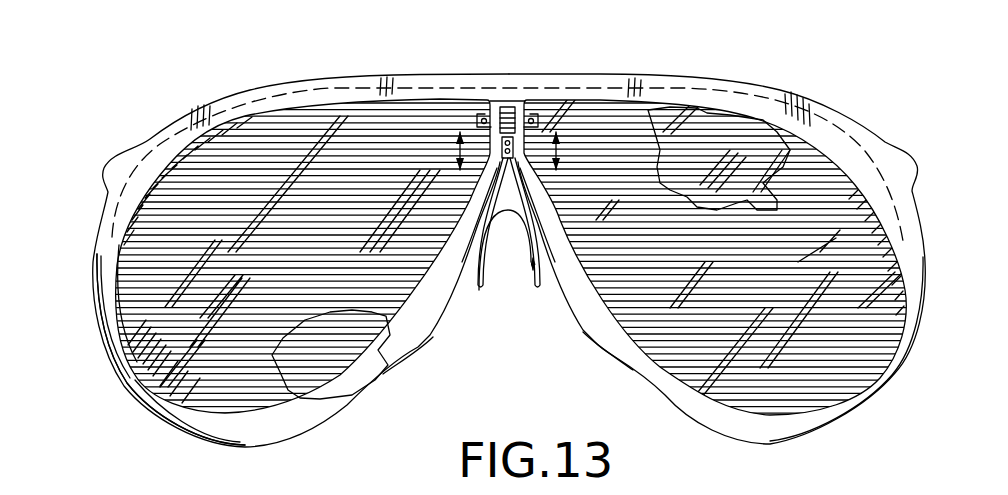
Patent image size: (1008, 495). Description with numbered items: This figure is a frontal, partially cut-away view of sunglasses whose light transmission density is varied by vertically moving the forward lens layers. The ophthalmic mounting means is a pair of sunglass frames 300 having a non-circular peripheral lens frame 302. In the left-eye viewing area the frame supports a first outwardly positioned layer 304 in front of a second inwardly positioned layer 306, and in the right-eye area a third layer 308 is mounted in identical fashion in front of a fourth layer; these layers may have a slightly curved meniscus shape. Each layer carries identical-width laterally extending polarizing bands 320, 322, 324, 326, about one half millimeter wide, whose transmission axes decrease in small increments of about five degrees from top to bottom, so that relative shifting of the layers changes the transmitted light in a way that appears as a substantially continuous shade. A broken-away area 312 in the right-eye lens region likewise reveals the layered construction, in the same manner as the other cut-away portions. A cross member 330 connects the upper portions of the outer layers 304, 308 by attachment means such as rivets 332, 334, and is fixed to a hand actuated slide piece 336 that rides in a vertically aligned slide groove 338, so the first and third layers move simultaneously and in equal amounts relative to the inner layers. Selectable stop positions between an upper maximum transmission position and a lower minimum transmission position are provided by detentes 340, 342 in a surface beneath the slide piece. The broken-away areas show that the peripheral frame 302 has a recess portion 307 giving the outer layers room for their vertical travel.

The sunglass frames 300 is at (295, 53).
The peripheral lens frame 302 is at (375, 75).
The first outwardly positioned layer 304 is at (617, 140).
The second inwardly positioned layer 306 is at (733, 142).
The recess portion 307 is at (818, 115).
The third layer 308 is at (253, 170).
The reflected image on left lens 312 is at (322, 358).
The laterally extending band 320 is at (115, 240).
The laterally extending band 322 is at (140, 258).
The laterally extending band 324 is at (132, 296).
The laterally extending band 326 is at (110, 347).
The cross member 330 is at (484, 118).
The rivet 332 is at (478, 100).
The rivet 334 is at (531, 104).
The hand actuated slide piece 336 is at (508, 107).
The slide groove 338 is at (528, 246).
The detente 340 is at (478, 286).
The detente 342 is at (462, 300).